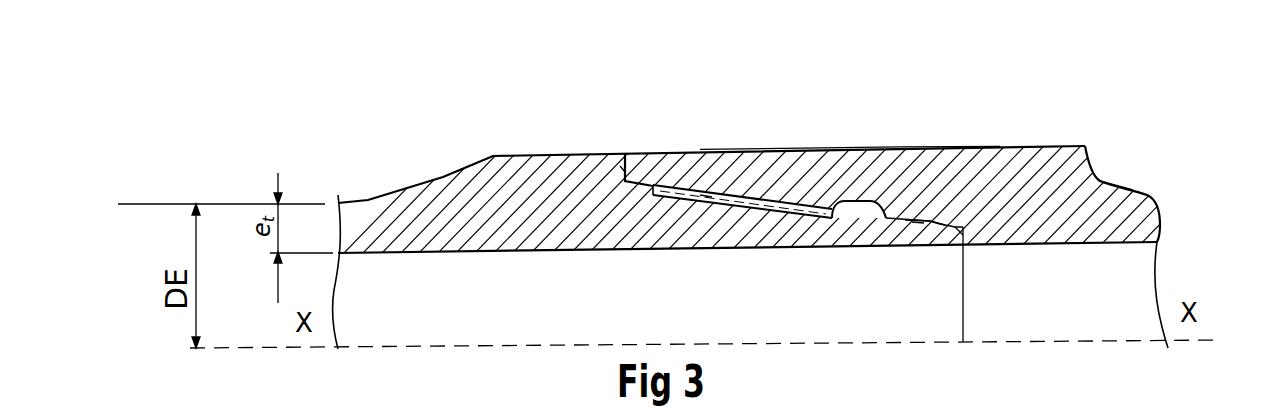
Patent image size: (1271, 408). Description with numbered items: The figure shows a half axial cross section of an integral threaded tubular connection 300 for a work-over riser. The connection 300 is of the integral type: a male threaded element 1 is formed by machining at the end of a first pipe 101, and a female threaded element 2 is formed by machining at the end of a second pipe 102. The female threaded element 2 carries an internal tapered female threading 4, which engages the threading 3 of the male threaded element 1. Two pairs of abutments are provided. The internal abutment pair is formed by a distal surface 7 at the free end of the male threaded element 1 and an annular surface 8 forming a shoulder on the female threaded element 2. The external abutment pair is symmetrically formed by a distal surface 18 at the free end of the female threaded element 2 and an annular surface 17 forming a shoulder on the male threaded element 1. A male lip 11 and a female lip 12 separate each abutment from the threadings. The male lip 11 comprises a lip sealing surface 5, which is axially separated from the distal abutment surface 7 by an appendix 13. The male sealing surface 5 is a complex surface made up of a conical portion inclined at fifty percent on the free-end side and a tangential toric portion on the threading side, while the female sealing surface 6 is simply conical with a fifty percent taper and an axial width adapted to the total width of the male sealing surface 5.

The male threaded element 1 is at (790, 280).
The female threaded element 2 is at (953, 127).
The threading 3 is at (704, 196).
The internal tapered female threading 4 is at (723, 190).
The lip sealing surface 5 is at (935, 222).
The female sealing surface 6 is at (916, 226).
The distal surface 7 is at (962, 233).
The annular surface 8 is at (976, 284).
The male lip 11 is at (917, 228).
The female lip 12 is at (647, 177).
The appendix 13 is at (948, 229).
The annular surface 17 is at (624, 178).
The distal surface 18 is at (620, 170).
The first pipe 101 is at (463, 198).
The second pipe 102 is at (1043, 194).
The threaded connection 300 is at (815, 130).